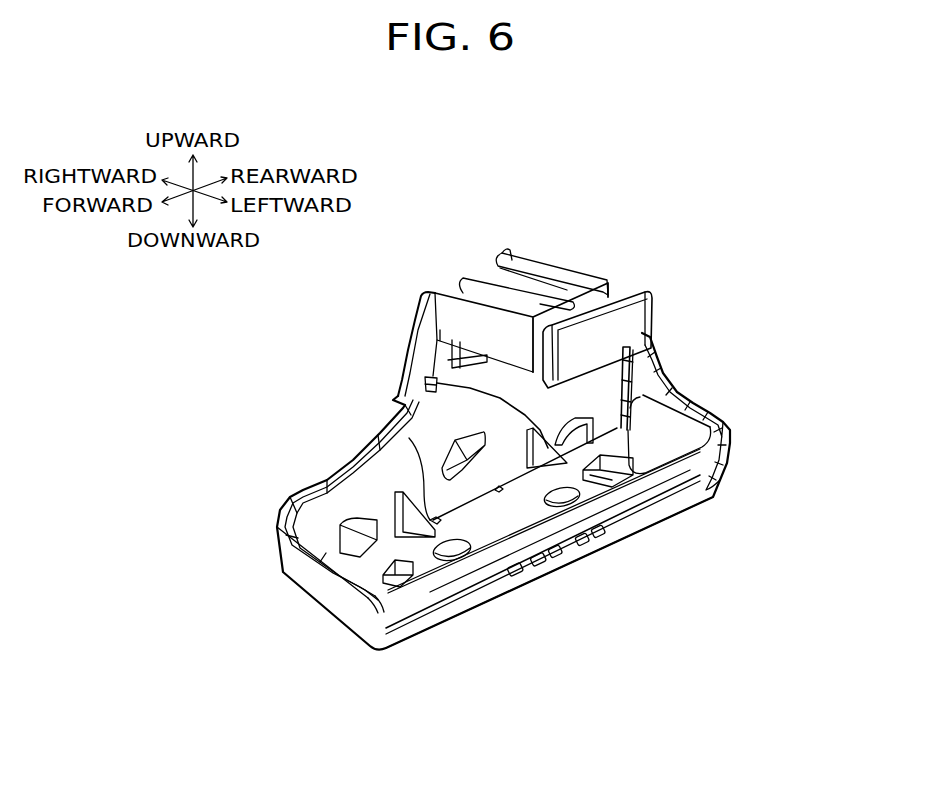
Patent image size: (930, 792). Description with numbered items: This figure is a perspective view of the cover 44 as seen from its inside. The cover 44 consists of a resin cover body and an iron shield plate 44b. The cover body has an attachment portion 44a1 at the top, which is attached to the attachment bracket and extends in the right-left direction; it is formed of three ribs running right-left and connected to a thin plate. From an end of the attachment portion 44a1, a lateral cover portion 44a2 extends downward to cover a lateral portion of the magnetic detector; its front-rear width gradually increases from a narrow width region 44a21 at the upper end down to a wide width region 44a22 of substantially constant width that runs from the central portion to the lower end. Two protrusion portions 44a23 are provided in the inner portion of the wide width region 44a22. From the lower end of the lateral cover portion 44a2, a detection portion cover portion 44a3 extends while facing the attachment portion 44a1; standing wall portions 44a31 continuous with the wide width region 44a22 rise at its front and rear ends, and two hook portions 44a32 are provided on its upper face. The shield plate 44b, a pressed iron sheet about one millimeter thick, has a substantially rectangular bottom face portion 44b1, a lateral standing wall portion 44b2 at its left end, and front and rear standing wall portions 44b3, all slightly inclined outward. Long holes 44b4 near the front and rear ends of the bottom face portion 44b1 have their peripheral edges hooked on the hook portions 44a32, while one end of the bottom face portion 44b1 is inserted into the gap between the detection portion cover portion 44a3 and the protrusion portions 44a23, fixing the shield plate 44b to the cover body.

The cover 44 is at (316, 312).
The attachment portion 44a1 is at (558, 258).
The lateral cover portion 44a2 is at (376, 433).
The narrow width region 44a21 is at (408, 352).
The wide width region 44a22 is at (280, 563).
The protrusion portions 44a23 is at (407, 437).
The detection portion cover portion 44a3 is at (493, 588).
The standing wall portions 44a31 is at (343, 608).
The hook portions 44a32 is at (416, 562).
The shield plate 44b is at (624, 503).
The bottom face portion 44b1 is at (505, 518).
The lateral standing wall portion 44b2 is at (588, 518).
The front and rear standing wall portions 44b3 is at (365, 573).
The long holes 44b4 is at (655, 392).